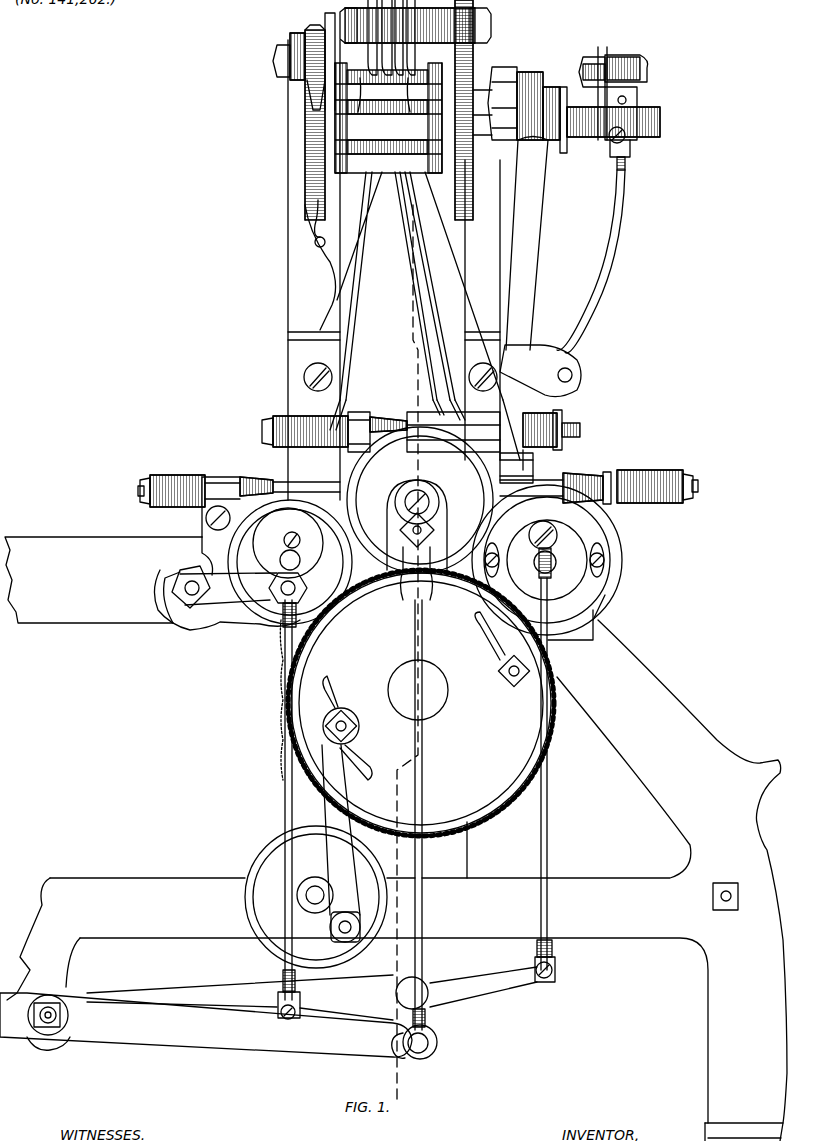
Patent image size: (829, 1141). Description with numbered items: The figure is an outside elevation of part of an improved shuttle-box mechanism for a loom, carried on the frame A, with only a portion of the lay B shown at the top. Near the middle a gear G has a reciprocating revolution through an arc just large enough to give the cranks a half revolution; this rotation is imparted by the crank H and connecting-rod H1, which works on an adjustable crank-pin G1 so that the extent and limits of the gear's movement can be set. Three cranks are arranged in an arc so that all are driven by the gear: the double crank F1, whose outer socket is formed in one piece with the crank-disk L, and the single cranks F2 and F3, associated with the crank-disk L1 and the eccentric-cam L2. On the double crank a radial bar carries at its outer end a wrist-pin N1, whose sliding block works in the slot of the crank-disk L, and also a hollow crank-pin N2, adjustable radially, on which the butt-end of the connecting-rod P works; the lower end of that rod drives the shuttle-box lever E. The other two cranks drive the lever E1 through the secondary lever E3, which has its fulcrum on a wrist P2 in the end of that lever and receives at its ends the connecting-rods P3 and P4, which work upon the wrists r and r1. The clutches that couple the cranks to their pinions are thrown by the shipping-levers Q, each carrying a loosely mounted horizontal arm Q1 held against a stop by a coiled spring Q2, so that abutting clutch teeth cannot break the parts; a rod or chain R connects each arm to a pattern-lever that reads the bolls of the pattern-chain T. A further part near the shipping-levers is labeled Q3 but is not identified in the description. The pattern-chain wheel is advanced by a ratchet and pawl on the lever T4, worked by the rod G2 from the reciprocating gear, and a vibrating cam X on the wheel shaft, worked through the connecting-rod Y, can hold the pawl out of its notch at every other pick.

The lay B is at (415, 37).
The lever T4 is at (508, 88).
The pattern-chain T is at (551, 113).
The vibrating cam X is at (610, 121).
The rod G2 is at (534, 244).
The connecting-rod Y is at (591, 261).
The rod or chain R is at (425, 316).
The gear G is at (297, 205).
The horizontal arm Q1 is at (418, 453).
The spring Q2 is at (408, 448).
The shipping-lever Q is at (434, 452).
The upper spring Q3 is at (551, 430).
The eccentric-cam L2 is at (277, 550).
The crank-disk L is at (420, 500).
The crank-disk L1 is at (547, 562).
The wrist-pin N1 is at (405, 568).
The hollow crank-pin N2 is at (425, 522).
The crank F2 is at (240, 590).
The crank F3 is at (534, 549).
The adjustable crank-pin G1 is at (360, 722).
The connecting-rod P3 is at (282, 800).
The connecting-rod P is at (425, 815).
The connecting-rod P4 is at (556, 774).
The connecting-rod H1 is at (341, 830).
The crank H is at (316, 897).
The frame A is at (397, 880).
The lever E is at (206, 1025).
The lever E1 is at (240, 997).
The wrist r is at (294, 994).
The secondary lever E3 is at (483, 987).
The wrist r1 is at (552, 961).
The wrist P2 is at (412, 1002).
The double crank F1 is at (414, 1042).